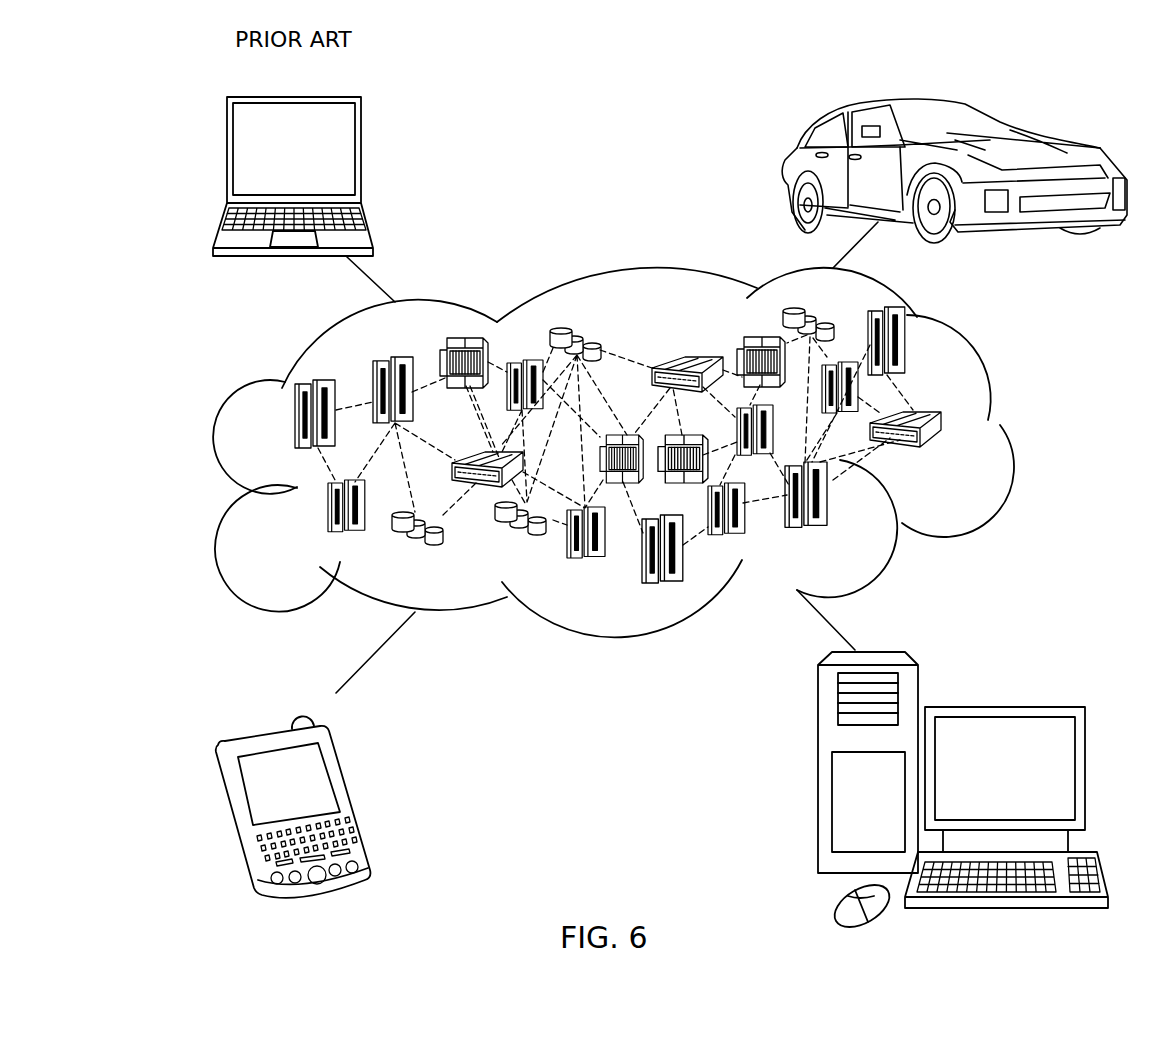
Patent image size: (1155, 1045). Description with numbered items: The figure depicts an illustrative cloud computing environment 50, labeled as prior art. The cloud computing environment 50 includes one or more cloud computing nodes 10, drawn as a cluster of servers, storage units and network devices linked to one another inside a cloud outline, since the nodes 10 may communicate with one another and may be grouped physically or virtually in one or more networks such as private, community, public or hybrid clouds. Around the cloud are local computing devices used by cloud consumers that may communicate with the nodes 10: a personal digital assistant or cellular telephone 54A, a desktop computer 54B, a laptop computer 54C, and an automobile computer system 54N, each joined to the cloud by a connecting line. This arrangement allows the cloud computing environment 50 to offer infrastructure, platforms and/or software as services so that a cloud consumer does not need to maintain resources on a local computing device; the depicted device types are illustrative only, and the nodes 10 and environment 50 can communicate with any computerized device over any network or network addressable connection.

The cloud computing nodes 10 is at (945, 455).
The cloud computing environment 50 is at (1000, 427).
The personal digital assistant (PDA) or cellular telephone 54A is at (352, 798).
The desktop computer 54B is at (1003, 707).
The laptop computer 54C is at (361, 157).
The automobile computer system 54N is at (790, 170).